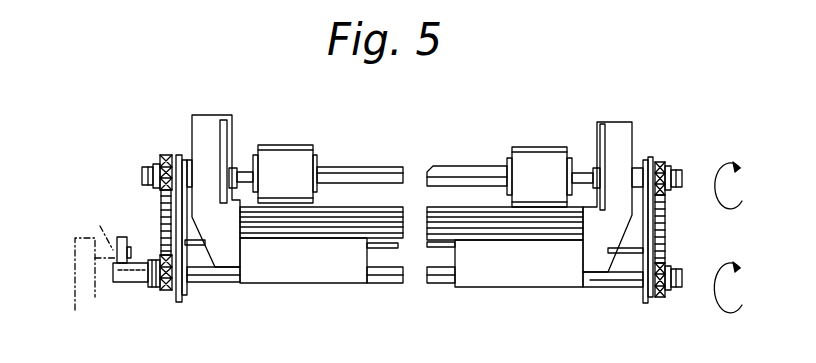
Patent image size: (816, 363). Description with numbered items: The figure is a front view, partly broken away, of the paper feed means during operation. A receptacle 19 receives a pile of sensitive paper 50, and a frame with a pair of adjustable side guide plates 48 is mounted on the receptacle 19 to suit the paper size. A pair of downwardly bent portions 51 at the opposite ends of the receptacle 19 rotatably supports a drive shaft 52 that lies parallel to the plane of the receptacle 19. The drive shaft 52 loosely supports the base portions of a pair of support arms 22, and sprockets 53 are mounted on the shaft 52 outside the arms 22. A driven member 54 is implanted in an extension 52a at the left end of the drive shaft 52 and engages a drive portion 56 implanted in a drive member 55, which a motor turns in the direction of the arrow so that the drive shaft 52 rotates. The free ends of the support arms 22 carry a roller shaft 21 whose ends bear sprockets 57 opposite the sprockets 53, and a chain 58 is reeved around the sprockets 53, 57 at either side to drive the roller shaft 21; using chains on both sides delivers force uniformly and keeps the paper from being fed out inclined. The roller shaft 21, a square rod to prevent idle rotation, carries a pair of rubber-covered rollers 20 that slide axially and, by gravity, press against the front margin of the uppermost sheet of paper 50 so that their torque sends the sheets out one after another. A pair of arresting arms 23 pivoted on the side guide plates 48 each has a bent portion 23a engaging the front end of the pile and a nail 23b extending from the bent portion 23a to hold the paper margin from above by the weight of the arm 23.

The receptacle 19 is at (385, 268).
The rollers 20 is at (295, 146).
The roller shaft 21 is at (452, 166).
The support arms 22 is at (177, 303).
The arresting arms 23 is at (227, 122).
The bent portion 23a is at (207, 121).
The nail 23b is at (238, 209).
The side guide plates 48 is at (235, 176).
The sensitive paper 50 is at (383, 200).
The downwardly bent portions 51 is at (184, 296).
The drive shaft 52 is at (443, 283).
The extension 52a is at (120, 279).
The sprockets 53 is at (167, 291).
The driven member 54 is at (121, 237).
The drive member 55 is at (73, 311).
The drive portion 56 is at (91, 231).
The sprockets 57 is at (165, 155).
The chain 58 is at (163, 214).